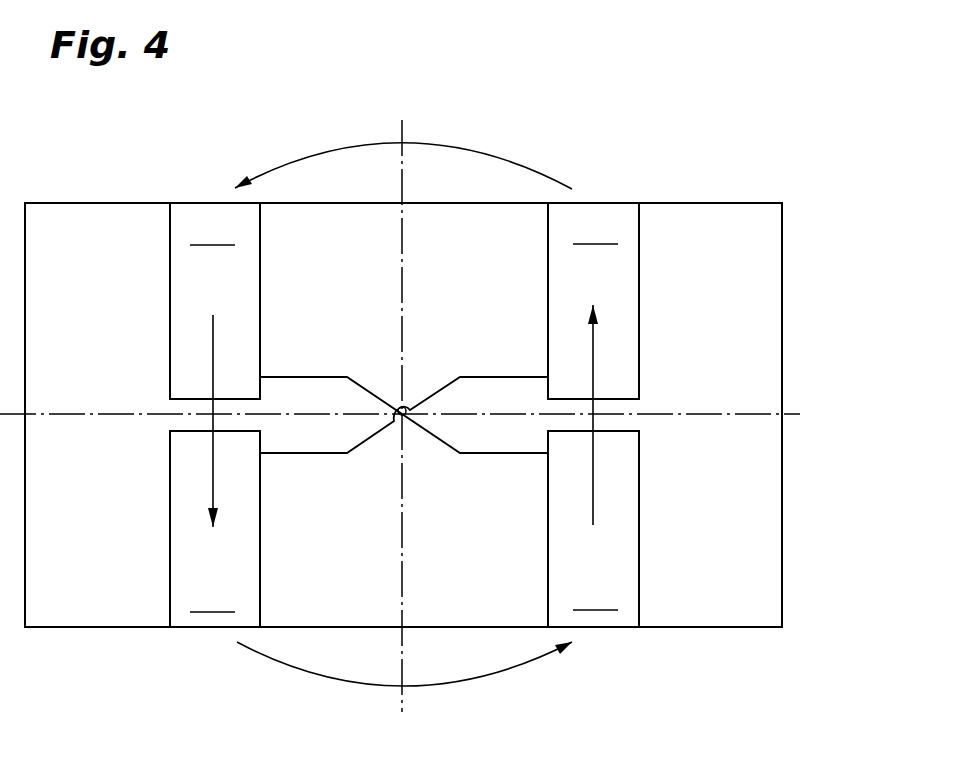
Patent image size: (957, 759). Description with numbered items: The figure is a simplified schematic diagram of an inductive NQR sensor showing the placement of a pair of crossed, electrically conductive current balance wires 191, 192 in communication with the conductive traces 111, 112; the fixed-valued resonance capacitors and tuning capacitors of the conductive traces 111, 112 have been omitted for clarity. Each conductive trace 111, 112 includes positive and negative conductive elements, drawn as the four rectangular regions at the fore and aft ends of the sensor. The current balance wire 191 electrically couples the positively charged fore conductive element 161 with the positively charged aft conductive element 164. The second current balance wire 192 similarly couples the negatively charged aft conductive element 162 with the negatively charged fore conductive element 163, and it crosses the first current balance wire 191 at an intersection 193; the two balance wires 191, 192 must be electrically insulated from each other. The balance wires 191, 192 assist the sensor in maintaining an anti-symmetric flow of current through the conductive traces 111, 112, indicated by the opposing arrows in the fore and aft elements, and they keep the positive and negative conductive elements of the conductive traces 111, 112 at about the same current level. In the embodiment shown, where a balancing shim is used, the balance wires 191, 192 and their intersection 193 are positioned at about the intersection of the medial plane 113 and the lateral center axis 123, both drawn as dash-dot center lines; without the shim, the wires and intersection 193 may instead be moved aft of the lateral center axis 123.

The conductive trace 111 is at (195, 637).
The conductive trace 112 is at (612, 640).
The medial plane 113 is at (403, 127).
The lateral center axis 123 is at (795, 412).
The positively charged fore conductive element 161 is at (215, 365).
The negatively charged aft conductive element 162 is at (215, 529).
The negatively charged fore conductive element 163 is at (593, 364).
The positively charged aft conductive element 164 is at (593, 529).
The current balance wire 191 is at (295, 377).
The current balance wire 192 is at (300, 457).
The intersection 193 is at (412, 390).